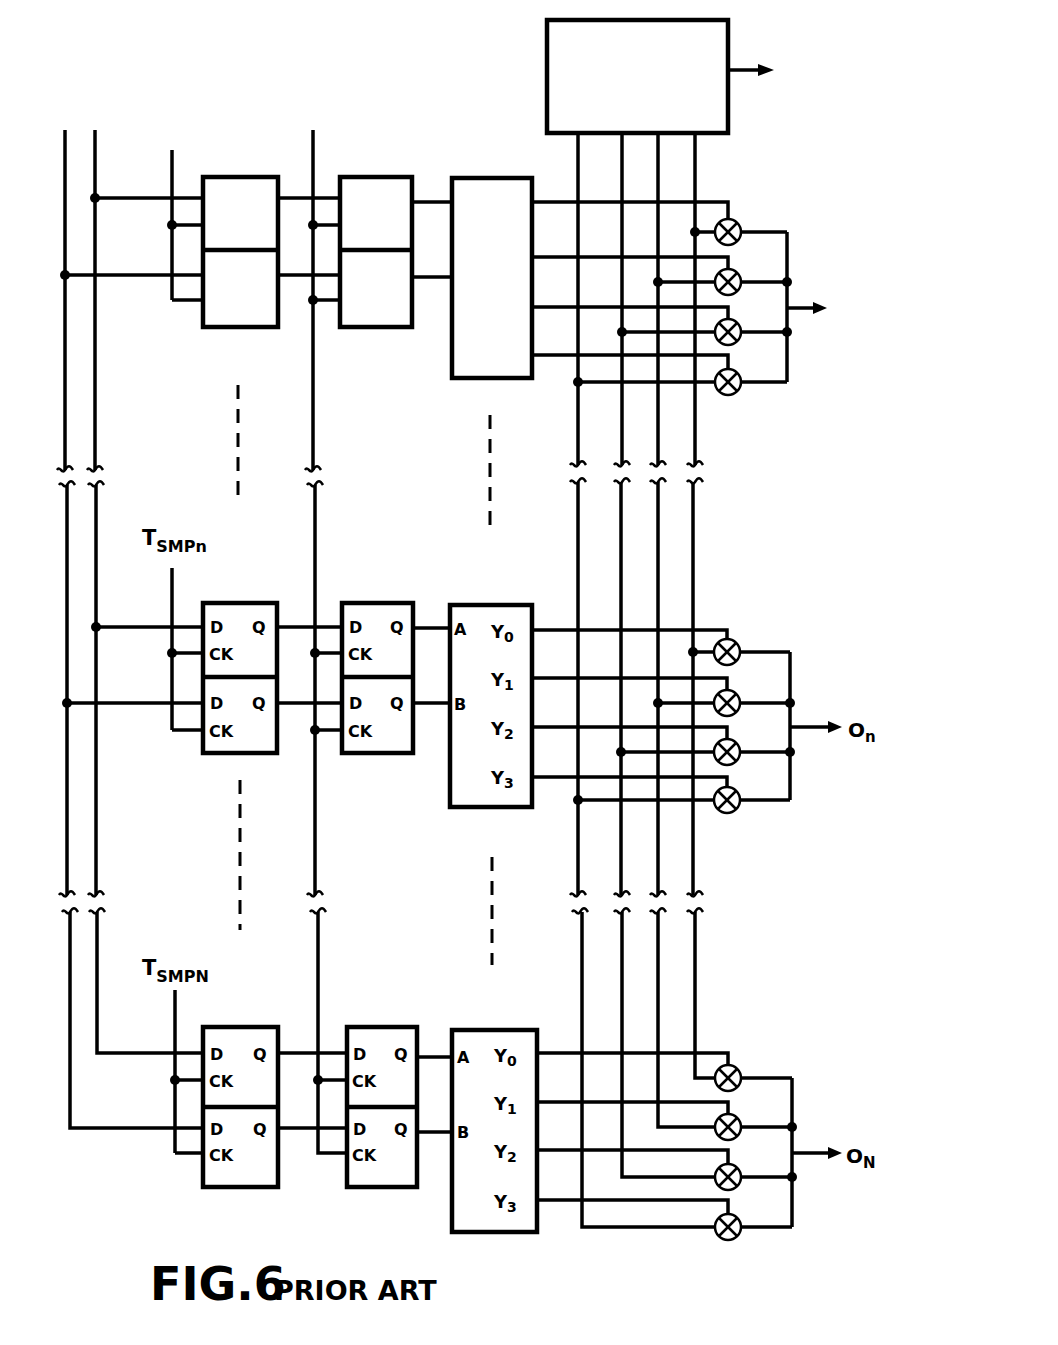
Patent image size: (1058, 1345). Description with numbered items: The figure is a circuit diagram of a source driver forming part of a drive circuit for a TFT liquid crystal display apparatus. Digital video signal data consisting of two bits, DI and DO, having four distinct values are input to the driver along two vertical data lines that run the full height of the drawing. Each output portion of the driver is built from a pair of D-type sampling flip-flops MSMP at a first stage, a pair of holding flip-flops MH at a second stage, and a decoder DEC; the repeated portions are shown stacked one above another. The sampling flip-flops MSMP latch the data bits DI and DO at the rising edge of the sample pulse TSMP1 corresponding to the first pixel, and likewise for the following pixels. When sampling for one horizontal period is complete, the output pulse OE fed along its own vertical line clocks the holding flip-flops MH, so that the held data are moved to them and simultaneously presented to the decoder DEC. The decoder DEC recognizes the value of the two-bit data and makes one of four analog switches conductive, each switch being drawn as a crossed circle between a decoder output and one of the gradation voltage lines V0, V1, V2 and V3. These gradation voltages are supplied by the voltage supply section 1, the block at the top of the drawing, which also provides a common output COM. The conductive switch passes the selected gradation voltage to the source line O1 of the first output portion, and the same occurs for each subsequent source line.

The voltage supply section 1 is at (547, 33).
The decoder DEC is at (466, 379).
The sampling flip-flop MSMP is at (230, 328).
The holding flip-flop MH is at (379, 328).
The common electrode output COM is at (779, 72).
The digital video signal data bit D1 DI is at (129, 613).
The digital video signal data bit D0 DO is at (145, 576).
The output pulse OE is at (319, 626).
The sample pulse TSMP1 is at (177, 199).
The gradation voltage V0 is at (695, 588).
The gradation voltage V1 is at (676, 613).
The gradation voltage V2 is at (656, 638).
The gradation voltage V3 is at (634, 663).
The source line O1 is at (799, 307).